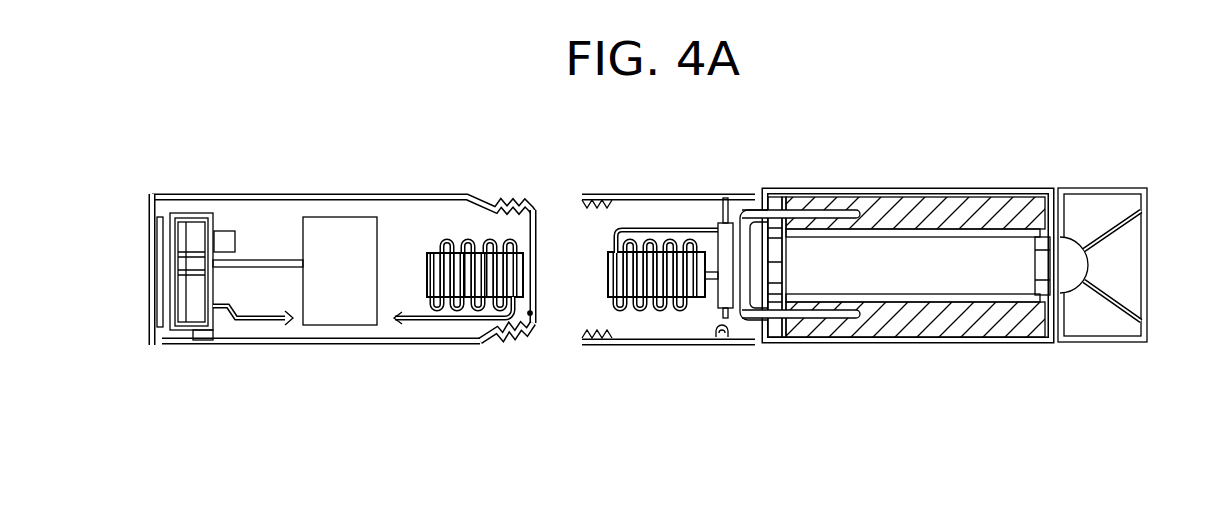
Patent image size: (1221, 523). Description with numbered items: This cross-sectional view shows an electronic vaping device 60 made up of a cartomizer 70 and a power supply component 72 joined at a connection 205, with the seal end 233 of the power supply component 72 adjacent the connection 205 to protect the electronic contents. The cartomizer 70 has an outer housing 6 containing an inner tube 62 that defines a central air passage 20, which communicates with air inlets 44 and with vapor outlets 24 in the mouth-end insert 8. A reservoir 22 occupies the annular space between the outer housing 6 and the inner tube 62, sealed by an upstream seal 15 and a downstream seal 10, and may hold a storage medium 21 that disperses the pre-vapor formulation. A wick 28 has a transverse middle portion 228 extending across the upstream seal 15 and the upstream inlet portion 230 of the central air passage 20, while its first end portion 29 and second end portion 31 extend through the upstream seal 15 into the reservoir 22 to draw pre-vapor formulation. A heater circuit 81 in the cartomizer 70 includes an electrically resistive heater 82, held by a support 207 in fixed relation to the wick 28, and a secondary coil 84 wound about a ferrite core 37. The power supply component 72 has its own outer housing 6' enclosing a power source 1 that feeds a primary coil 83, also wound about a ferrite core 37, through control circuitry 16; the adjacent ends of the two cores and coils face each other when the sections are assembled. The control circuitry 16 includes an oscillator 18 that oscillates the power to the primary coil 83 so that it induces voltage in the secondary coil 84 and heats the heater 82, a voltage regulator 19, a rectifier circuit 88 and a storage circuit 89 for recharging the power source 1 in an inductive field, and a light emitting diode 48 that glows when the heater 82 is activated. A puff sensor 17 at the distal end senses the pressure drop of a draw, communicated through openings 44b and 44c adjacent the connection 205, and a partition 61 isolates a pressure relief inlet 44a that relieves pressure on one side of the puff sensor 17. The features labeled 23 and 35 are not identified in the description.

The power source 1 is at (327, 225).
The outer housing 6 is at (908, 299).
The second outer housing 6' is at (321, 372).
The mouth-end insert 8 is at (1126, 252).
The downstream seal 10 is at (1050, 207).
The upstream seal 15 is at (765, 192).
The control circuitry 16 is at (193, 230).
The puff sensor 17 is at (177, 238).
The oscillator 18 is at (193, 337).
The voltage regulator 19 is at (227, 230).
The central air passage 20 is at (946, 285).
The storage medium 21 is at (986, 315).
The reservoir 22 is at (901, 330).
The heating element 23 is at (1004, 203).
The vapor outlets 24 is at (1144, 323).
The wick 28 is at (784, 276).
The first end portion 29 is at (836, 210).
The second end portion 31 is at (839, 320).
The first coil 35 is at (463, 227).
The ferrite core 37 is at (469, 285).
The air inlets 44 is at (758, 347).
The pressure relief inlet 44a is at (160, 350).
The opening 44b is at (722, 345).
The opening 44c is at (510, 337).
The light emitting diode 48 is at (157, 268).
The electronic vaping device 60 is at (353, 129).
The partition 61 is at (206, 341).
The inner tube 62 is at (917, 240).
The cartomizer 70 is at (951, 178).
The power supply component 72 is at (400, 172).
The heater circuit 81 is at (646, 225).
The electrically resistive heater 82 is at (722, 222).
The primary coil 83 is at (441, 307).
The secondary coil 84 is at (646, 312).
The rectifier circuit 88 is at (191, 260).
The storage circuit 89 is at (191, 281).
The connector 205 is at (540, 338).
The support 207 is at (729, 220).
The transverse middle portion 228 is at (792, 196).
The upstream inlet portion 230 is at (776, 257).
The seal end 233 is at (535, 227).